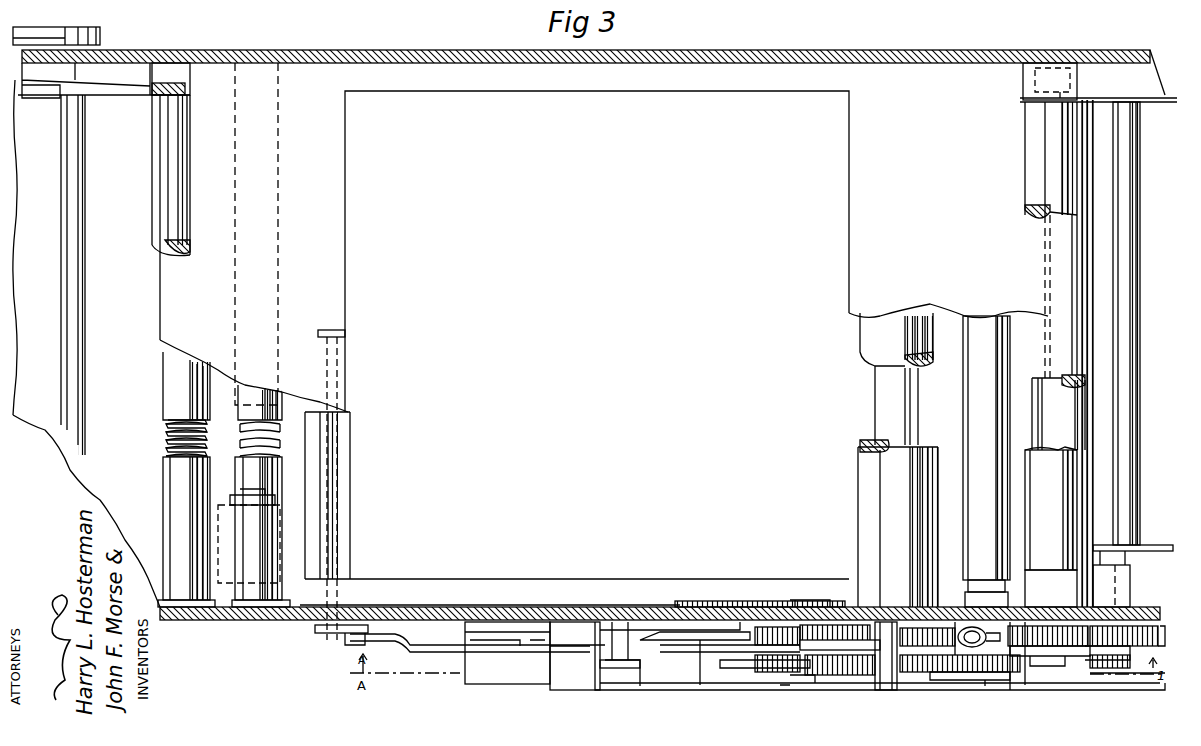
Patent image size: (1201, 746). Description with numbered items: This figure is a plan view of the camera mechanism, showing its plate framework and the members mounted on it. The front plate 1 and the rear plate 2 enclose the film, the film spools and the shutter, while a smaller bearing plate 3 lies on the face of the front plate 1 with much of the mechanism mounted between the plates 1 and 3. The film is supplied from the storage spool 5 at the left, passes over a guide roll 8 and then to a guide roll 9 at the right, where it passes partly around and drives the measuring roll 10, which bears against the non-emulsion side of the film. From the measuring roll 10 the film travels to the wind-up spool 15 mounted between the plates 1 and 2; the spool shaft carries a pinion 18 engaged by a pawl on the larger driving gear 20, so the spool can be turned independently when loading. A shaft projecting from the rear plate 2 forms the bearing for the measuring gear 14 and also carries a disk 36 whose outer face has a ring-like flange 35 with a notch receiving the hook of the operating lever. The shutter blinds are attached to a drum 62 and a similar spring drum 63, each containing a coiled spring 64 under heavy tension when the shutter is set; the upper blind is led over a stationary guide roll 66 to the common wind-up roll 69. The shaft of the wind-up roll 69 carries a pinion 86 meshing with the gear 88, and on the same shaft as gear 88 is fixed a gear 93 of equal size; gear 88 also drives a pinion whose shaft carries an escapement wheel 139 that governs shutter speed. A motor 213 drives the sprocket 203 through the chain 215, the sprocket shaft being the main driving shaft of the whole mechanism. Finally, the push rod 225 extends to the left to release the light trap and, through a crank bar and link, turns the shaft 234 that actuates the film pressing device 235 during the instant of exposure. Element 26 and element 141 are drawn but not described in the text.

The front plate 1 is at (430, 607).
The rear plate 2 is at (535, 65).
The bearing plate 3 is at (736, 685).
The storage spool 5 is at (60, 327).
The guide roll 8 is at (152, 228).
The guide roll 9 is at (1042, 458).
The measuring roll 10 is at (1035, 395).
The measuring gear 14 is at (1035, 628).
The wind-up spool 15 is at (1120, 333).
The pinion 18 is at (1128, 645).
The driving gear 20 is at (1163, 632).
The rack 26 is at (1015, 665).
The flange 35 is at (1065, 660).
The disk 36 is at (1095, 647).
The drum 62 is at (167, 511).
The spring drum 63 is at (275, 490).
The coiled spring 64 is at (165, 445).
The stationary guide roll 66 is at (980, 530).
The wind-up roll 69 is at (858, 495).
The pinion 86 is at (905, 630).
The gear 88 is at (855, 625).
The gear 93 is at (878, 660).
The escapement wheel 139 is at (806, 597).
The bracket 141 is at (785, 688).
The sprocket 203 is at (700, 603).
The motor 213 is at (255, 500).
The chain 215 is at (525, 605).
The push rod 225 is at (520, 645).
The shaft 234 is at (335, 460).
The film pressing device 235 is at (350, 335).